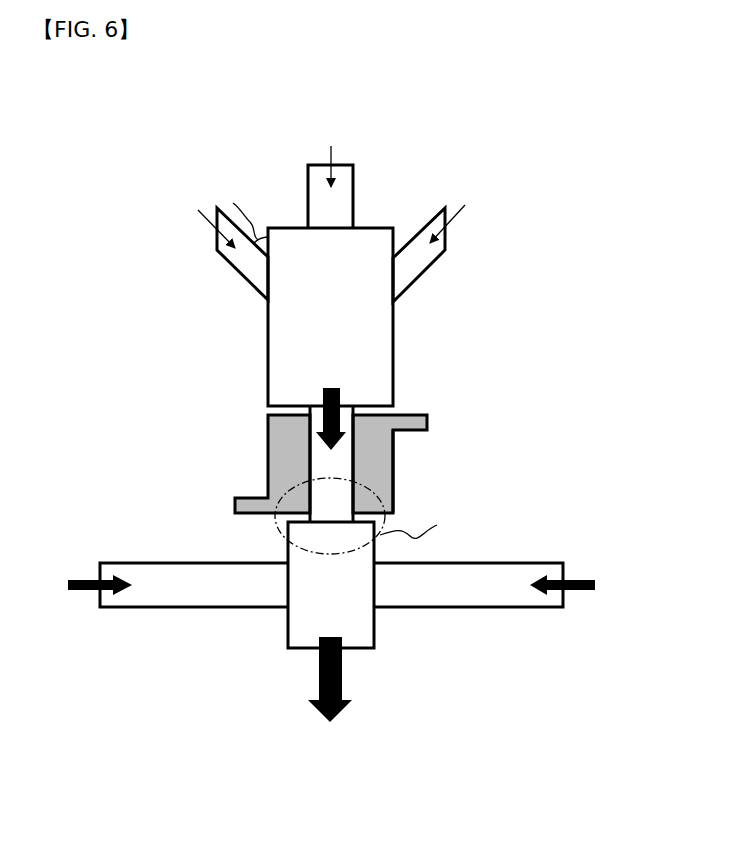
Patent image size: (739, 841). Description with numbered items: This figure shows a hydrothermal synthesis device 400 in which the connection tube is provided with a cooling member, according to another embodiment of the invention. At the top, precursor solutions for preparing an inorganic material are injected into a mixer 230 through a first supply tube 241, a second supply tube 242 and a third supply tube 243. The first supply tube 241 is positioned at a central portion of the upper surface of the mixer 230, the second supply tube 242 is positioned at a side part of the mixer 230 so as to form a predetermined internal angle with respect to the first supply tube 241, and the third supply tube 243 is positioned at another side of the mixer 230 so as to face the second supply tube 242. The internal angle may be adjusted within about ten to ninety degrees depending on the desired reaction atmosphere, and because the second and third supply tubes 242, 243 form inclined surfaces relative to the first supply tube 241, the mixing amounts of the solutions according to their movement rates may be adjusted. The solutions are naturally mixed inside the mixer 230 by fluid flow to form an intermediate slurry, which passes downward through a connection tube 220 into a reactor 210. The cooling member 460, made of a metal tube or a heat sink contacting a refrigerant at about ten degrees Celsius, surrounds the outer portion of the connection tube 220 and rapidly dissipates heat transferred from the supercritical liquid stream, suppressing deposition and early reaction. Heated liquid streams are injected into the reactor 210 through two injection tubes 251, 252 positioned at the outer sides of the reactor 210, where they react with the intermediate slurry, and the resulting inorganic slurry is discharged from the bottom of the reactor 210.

The hydrothermal synthesis device 400 is at (103, 158).
The first supply tube 241 is at (353, 183).
The second supply tube 242 is at (228, 273).
The third supply tube 243 is at (423, 273).
The mixer 230 is at (395, 355).
The connection tube 220 is at (308, 462).
The cooling member 460 is at (397, 468).
The reactor 210 is at (375, 622).
The injection tube 251 is at (185, 607).
The injection tube 252 is at (453, 607).